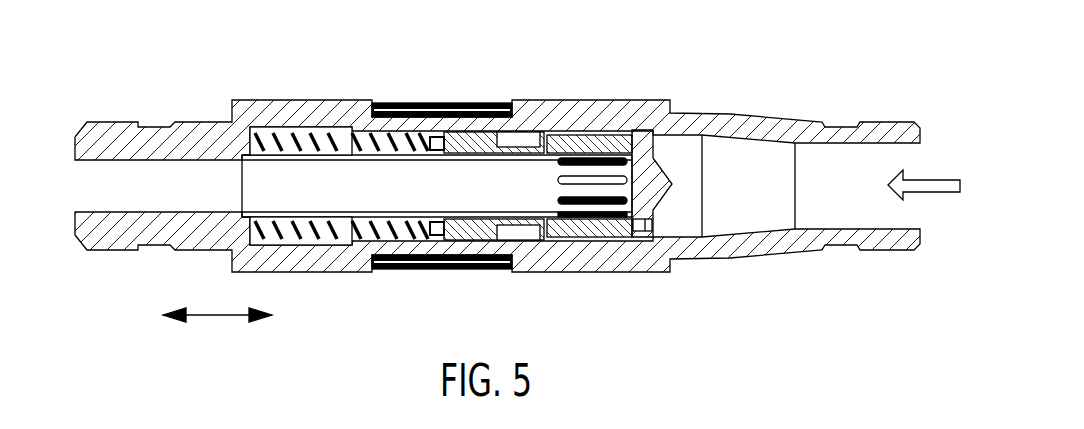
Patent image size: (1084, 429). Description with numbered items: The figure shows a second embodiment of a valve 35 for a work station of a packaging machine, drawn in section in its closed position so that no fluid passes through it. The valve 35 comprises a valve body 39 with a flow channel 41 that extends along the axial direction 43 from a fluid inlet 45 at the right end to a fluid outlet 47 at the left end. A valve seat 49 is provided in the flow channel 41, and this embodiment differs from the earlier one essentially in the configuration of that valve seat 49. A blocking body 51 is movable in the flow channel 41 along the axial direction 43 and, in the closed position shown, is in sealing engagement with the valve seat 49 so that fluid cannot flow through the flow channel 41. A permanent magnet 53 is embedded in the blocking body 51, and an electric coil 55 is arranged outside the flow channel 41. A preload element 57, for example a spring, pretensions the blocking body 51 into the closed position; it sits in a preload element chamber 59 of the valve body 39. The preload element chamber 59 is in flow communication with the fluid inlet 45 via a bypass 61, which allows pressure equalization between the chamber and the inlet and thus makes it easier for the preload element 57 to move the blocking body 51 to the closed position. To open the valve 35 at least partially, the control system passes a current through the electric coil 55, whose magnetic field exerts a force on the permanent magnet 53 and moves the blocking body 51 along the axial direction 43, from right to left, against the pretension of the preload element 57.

The valve 35 is at (502, 184).
The valve body 39 is at (215, 137).
The flow channel 41 is at (186, 187).
The axial direction 43 is at (213, 318).
The fluid inlet 45 is at (928, 164).
The fluid outlet 47 is at (60, 177).
The valve seat 49 is at (651, 179).
The blocking body 51 is at (572, 140).
The permanent magnet 53 is at (523, 140).
The electric coil 55 is at (388, 103).
The preload element 57 is at (312, 140).
The preload element chamber 59 is at (257, 124).
The bypass 61 is at (450, 140).